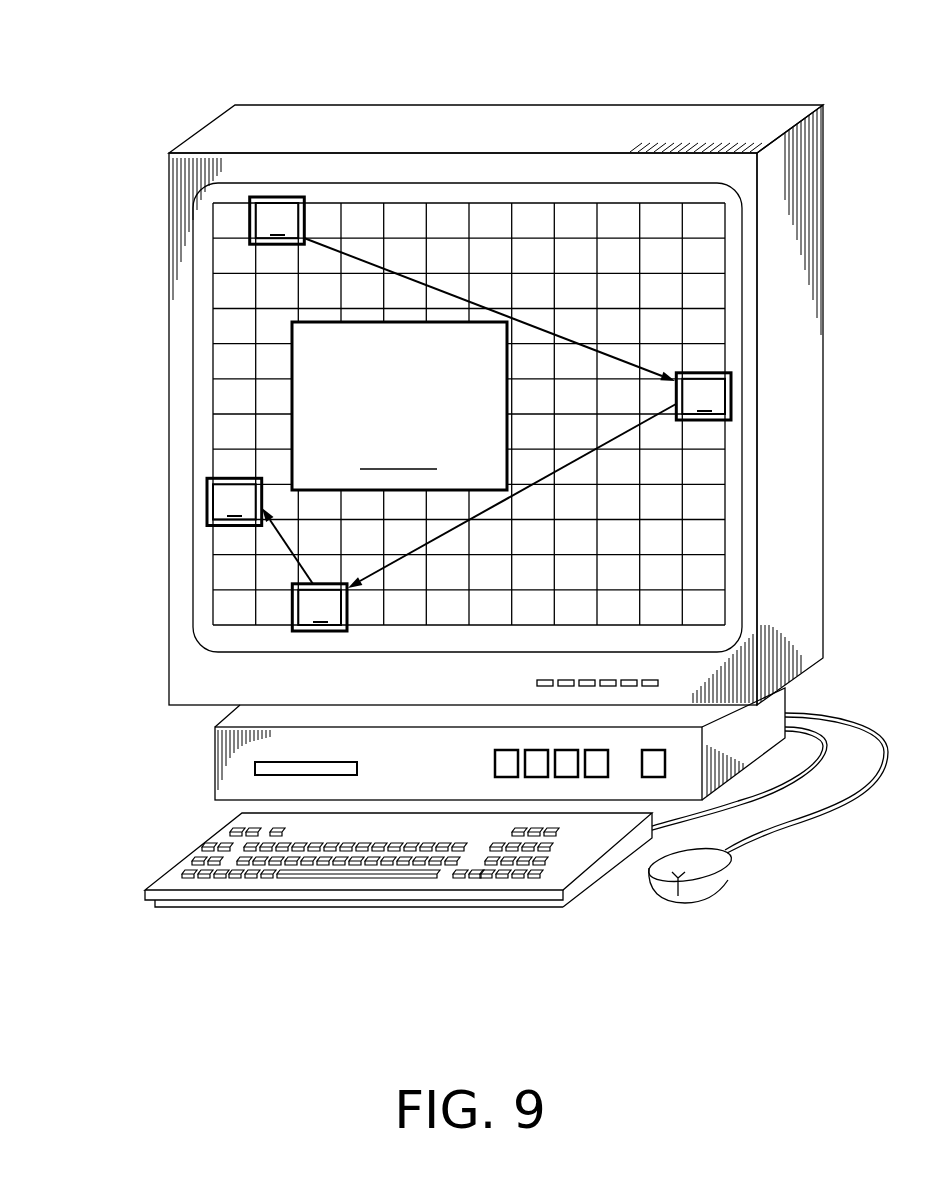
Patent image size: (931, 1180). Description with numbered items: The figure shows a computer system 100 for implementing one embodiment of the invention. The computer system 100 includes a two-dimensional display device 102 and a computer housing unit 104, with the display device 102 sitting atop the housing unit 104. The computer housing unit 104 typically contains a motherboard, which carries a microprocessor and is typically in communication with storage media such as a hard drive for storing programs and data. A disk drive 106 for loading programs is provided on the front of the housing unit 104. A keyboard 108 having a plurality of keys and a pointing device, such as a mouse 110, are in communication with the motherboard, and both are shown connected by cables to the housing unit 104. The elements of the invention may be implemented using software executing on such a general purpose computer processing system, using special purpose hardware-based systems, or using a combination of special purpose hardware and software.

The computer system 100 is at (496, 353).
The two-dimensional display device 102 is at (618, 533).
The computer housing unit 104 is at (423, 744).
The disk drive 106 is at (357, 768).
The keyboard 108 is at (204, 843).
The mouse 110 is at (700, 887).